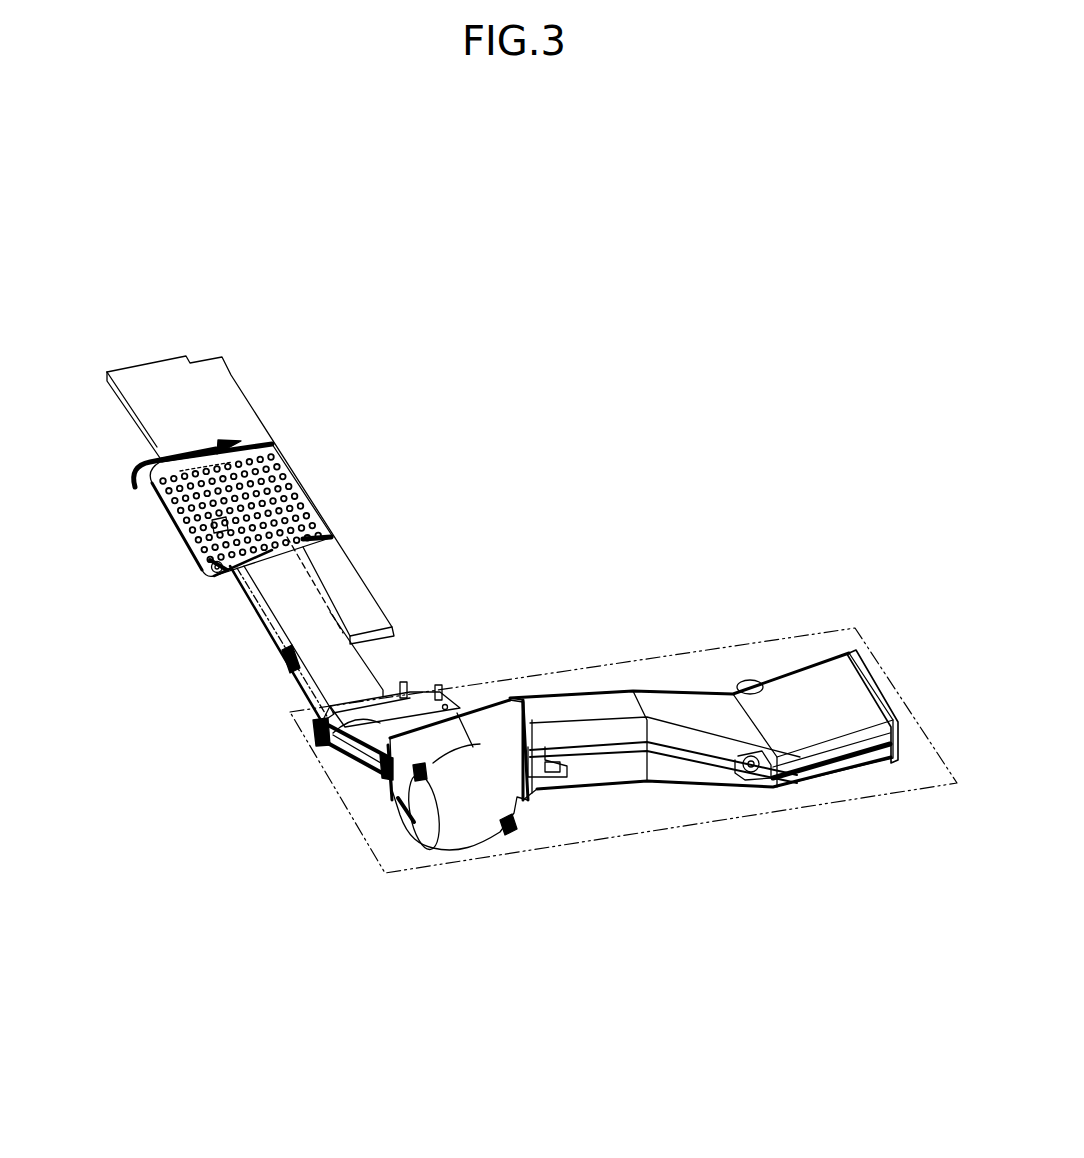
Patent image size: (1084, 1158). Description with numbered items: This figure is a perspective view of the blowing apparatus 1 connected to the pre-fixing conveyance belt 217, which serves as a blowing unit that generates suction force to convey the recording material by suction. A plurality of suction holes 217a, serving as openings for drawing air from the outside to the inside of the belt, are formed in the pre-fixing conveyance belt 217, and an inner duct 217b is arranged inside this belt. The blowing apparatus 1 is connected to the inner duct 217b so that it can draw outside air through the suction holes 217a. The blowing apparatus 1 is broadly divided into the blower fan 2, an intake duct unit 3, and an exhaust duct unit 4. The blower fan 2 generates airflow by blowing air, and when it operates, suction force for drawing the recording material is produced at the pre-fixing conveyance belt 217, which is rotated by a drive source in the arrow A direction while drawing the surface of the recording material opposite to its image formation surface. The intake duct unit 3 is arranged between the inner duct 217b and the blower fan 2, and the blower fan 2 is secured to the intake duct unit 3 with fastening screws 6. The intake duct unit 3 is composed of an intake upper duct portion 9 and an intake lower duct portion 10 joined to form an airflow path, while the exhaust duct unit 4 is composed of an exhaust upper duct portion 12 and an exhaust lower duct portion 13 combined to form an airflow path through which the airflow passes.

The blowing apparatus 1 is at (625, 661).
The blower fan 2 is at (467, 848).
The intake duct unit 3 is at (215, 772).
The exhaust duct unit 4 is at (753, 897).
The fastening screws 6 is at (433, 780).
The intake upper duct portion 9 is at (322, 732).
The intake lower duct portion 10 is at (358, 760).
The exhaust upper duct portion 12 is at (607, 730).
The exhaust lower duct portion 13 is at (688, 770).
The pre-fixing conveyance belt 217 is at (175, 530).
The suction holes 217a is at (207, 522).
The inner duct 217b is at (265, 620).
The arrow A direction A is at (130, 470).